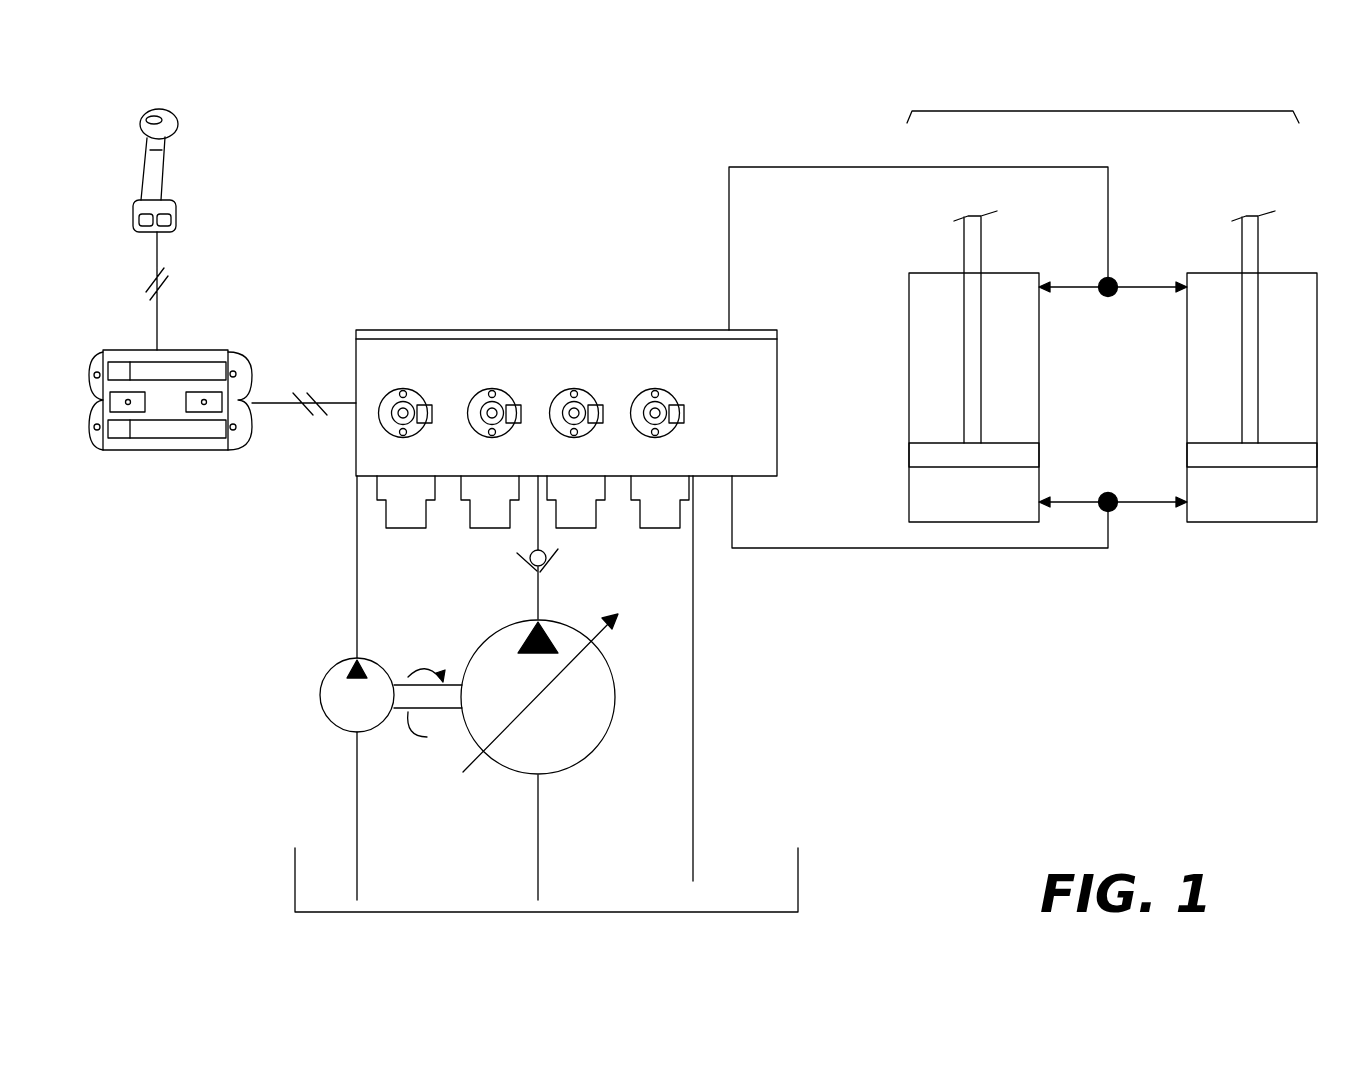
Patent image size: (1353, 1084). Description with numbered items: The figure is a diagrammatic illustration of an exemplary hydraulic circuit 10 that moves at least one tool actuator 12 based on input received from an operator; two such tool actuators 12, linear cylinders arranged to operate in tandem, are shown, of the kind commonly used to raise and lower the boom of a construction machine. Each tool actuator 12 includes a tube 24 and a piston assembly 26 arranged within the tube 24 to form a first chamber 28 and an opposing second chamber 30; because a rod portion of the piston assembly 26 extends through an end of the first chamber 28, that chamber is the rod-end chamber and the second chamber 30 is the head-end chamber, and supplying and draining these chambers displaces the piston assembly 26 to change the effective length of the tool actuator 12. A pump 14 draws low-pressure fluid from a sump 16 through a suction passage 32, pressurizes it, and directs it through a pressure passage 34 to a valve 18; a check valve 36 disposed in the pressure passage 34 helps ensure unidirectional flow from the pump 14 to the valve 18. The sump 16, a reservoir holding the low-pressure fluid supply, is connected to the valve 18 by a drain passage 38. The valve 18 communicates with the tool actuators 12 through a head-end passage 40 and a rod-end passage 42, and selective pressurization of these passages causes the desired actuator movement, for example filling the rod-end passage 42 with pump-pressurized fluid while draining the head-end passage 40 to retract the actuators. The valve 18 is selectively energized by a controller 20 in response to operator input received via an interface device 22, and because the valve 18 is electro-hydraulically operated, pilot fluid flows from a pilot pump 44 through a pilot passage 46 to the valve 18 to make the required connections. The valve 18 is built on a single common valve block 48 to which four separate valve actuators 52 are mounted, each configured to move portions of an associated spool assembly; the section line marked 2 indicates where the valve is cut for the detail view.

The section line of FIG. 2 is at (403, 357).
The hydraulic circuit 10 is at (1108, 715).
The tool actuator 12 is at (1183, 111).
The pump 14 is at (550, 744).
The sump 16 is at (798, 866).
The valve 18 is at (578, 213).
The controller 20 is at (153, 414).
The interface device 22 is at (168, 178).
The tube 24 is at (1039, 366).
The piston assembly 26 is at (1025, 451).
The first chamber 28 is at (995, 373).
The second chamber 30 is at (962, 503).
The suction passage 32 is at (540, 820).
The pressure passage 34 is at (533, 517).
The check valve 36 is at (557, 551).
The drain passage 38 is at (693, 648).
The head-end passage 40 is at (962, 557).
The rod-end passage 42 is at (1038, 167).
The pilot pump 44 is at (345, 707).
The pilot passage 46 is at (357, 590).
The valve block 48 is at (523, 374).
The valve actuator 52 is at (489, 410).